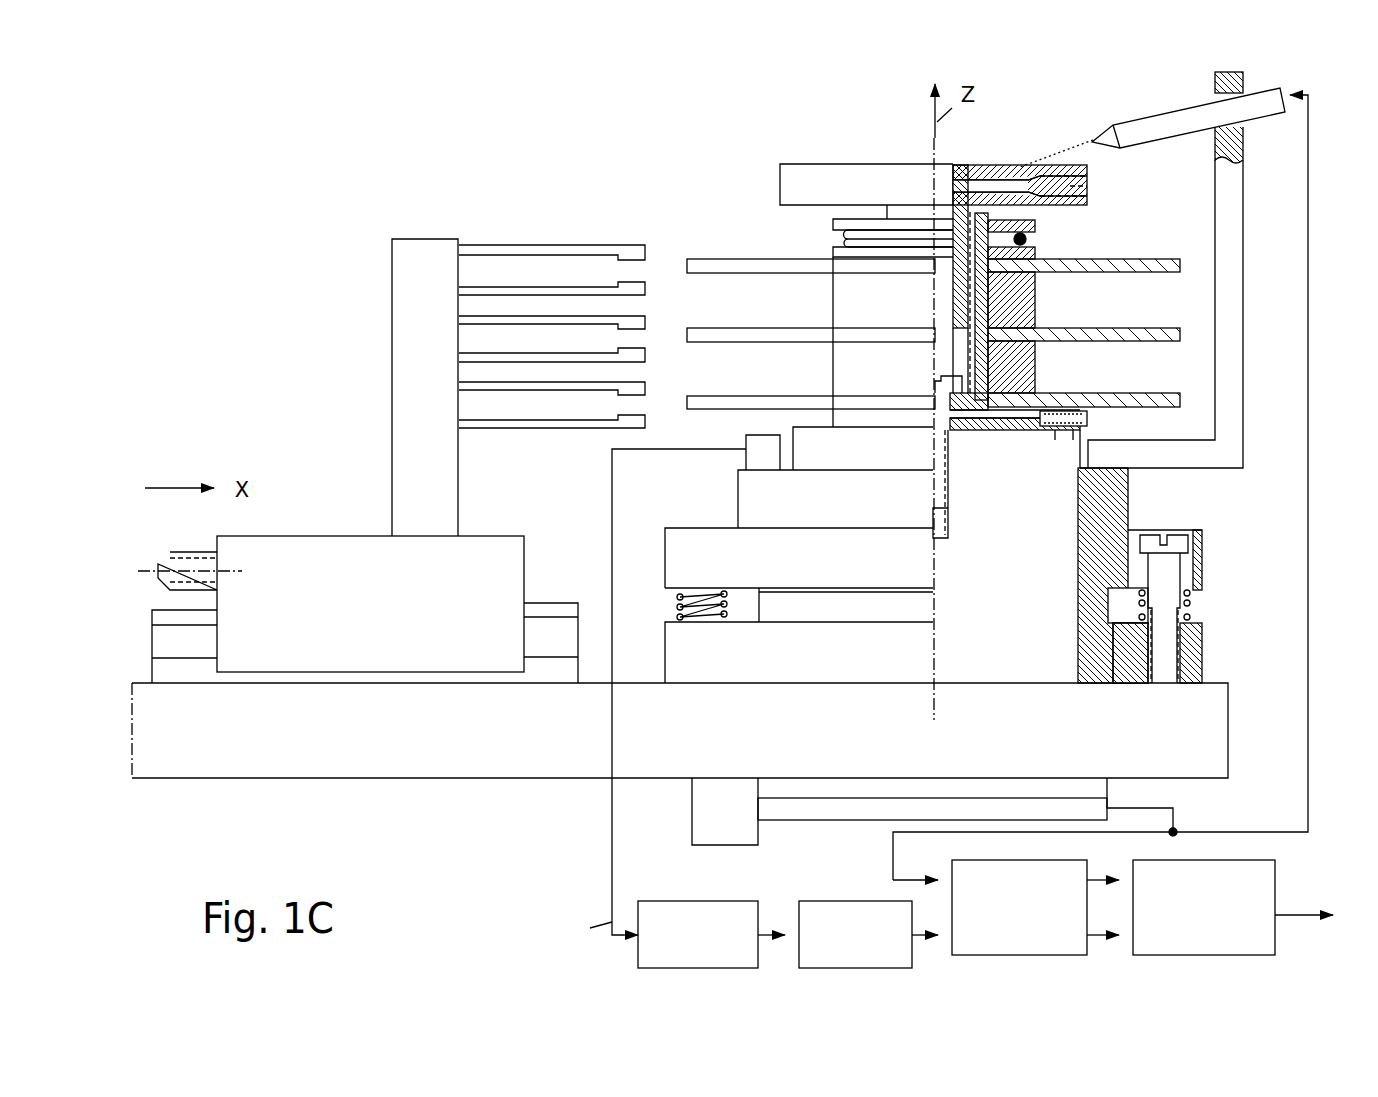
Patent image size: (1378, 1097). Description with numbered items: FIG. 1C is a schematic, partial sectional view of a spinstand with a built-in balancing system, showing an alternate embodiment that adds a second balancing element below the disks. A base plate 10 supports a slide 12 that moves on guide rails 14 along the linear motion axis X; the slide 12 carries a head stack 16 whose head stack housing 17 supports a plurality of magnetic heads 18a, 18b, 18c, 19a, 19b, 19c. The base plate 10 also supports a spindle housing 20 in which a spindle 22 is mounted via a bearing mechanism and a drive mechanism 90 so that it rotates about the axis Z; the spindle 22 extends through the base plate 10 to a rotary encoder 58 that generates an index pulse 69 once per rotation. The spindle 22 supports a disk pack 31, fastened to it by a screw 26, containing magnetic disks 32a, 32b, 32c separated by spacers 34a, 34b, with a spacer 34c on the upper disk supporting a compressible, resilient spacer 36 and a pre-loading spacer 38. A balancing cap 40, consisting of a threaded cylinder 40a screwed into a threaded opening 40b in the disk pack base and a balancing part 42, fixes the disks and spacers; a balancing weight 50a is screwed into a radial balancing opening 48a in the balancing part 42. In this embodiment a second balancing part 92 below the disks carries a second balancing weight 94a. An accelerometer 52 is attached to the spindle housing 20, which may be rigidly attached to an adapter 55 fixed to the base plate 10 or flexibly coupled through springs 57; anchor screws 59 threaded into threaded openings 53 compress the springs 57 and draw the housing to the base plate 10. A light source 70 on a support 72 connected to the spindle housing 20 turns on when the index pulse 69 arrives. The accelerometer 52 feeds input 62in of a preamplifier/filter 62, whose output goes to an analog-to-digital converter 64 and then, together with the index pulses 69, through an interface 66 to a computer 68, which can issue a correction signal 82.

The base plate 10 is at (363, 750).
The slide 12 is at (330, 624).
The guide rails 14 is at (191, 637).
The head stack 16 is at (473, 333).
The head stack housing 17 is at (425, 314).
The magnetic head 18a is at (552, 382).
The magnetic head 18b is at (518, 316).
The magnetic head 18c is at (487, 245).
The magnetic head 19a is at (572, 428).
The magnetic head 19b is at (527, 362).
The magnetic head 19c is at (478, 295).
The spindle housing 20 is at (752, 563).
The spindle 22 is at (1126, 556).
The screw 26 is at (940, 490).
The disk pack 31 is at (742, 242).
The magnetic disk 32a is at (720, 402).
The magnetic disk 32b is at (720, 334).
The magnetic disk 32c is at (713, 267).
The spacer 34a is at (1033, 374).
The spacer 34b is at (1037, 314).
The spacer 34c is at (1030, 252).
The compressible resilient spacer 36 is at (1028, 235).
The pre-loading spacer 38 is at (848, 226).
The balancing cap 40 is at (984, 254).
The threaded cylinder 40a is at (960, 252).
The threaded opening 40b is at (968, 372).
The balancing part 42 is at (800, 186).
The balancing opening 48a is at (1087, 178).
The balancing weight 50a is at (1069, 161).
The accelerometer 52 is at (758, 455).
The threaded openings 53 is at (1170, 676).
The adapter 55 is at (693, 664).
The springs 57 is at (680, 606).
The rotary encoder 58 is at (832, 805).
The anchor screws 59 is at (1162, 580).
The preamplifier/filter 62 is at (698, 934).
The input of preamplifier/filter 62in is at (644, 698).
The analog-to-digital converter 64 is at (855, 934).
The interface 66 is at (1019, 907).
The computer 68 is at (1204, 907).
The index pulse 69 is at (1178, 818).
The light source 70 is at (1167, 125).
The support 72 is at (1230, 260).
The correction signal 82 is at (1313, 913).
The drive mechanism 90 is at (718, 804).
The second balancing part 92 is at (1088, 417).
The balancing weight 94a is at (1058, 436).